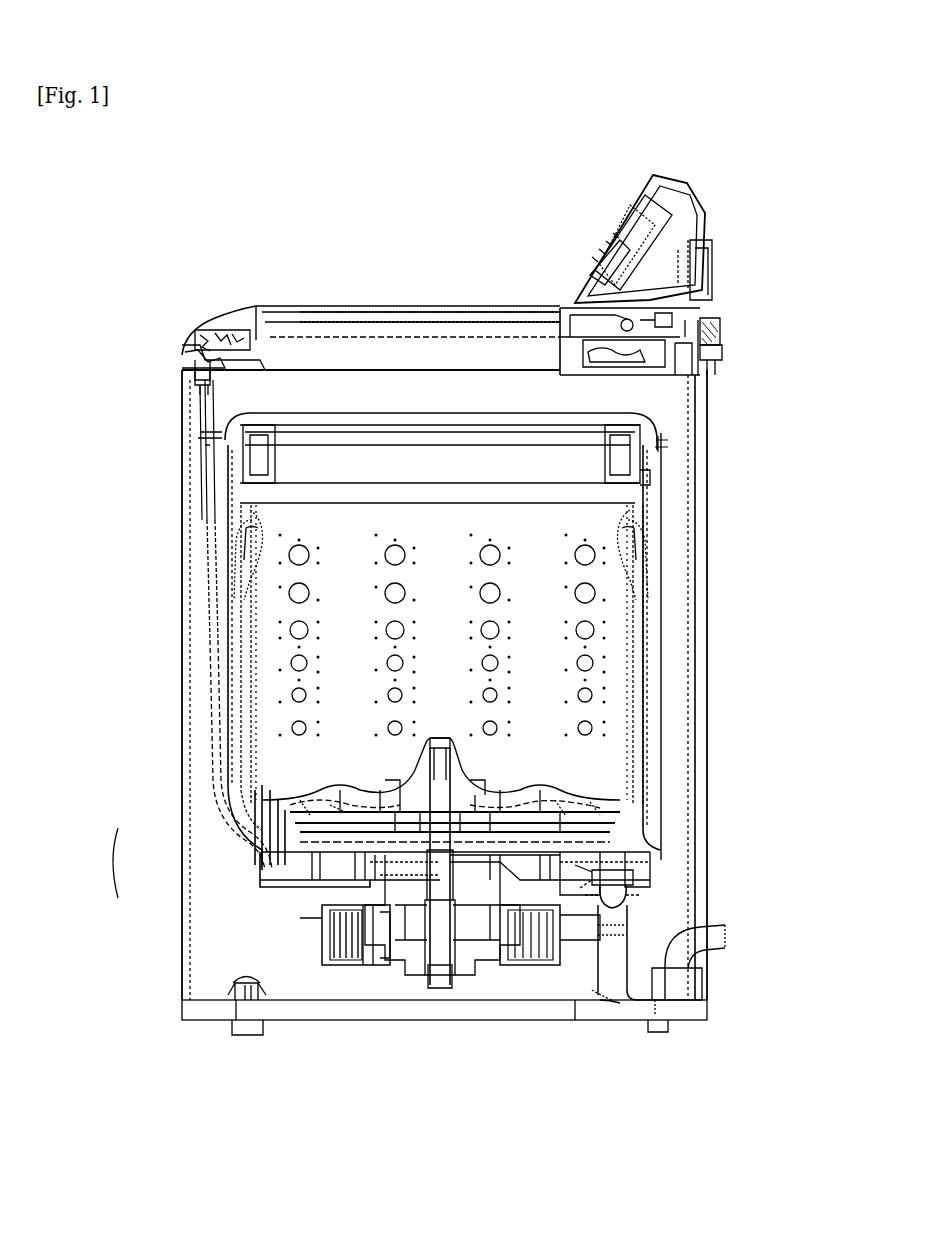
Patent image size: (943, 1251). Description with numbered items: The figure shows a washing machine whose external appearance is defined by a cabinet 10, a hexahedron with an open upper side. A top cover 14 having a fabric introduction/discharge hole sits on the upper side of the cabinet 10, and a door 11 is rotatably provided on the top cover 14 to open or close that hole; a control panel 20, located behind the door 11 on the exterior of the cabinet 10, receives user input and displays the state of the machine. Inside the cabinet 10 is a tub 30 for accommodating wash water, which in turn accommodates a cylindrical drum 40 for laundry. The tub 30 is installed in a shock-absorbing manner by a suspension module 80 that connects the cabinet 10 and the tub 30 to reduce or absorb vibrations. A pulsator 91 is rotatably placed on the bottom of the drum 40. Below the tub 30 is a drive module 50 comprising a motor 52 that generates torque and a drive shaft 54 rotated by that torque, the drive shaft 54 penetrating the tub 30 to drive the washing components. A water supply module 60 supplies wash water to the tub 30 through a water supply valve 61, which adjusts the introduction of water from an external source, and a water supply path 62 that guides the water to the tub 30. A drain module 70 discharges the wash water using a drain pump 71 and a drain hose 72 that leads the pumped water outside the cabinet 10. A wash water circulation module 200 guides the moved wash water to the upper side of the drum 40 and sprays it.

The cabinet 10 is at (205, 418).
The door 11 is at (270, 312).
The top cover 14 is at (185, 357).
The control panel 20 is at (612, 211).
The tub 30 is at (668, 475).
The drum 40 is at (600, 606).
The drive module 50 is at (99, 863).
The motor 52 is at (330, 935).
The drive shaft 54 is at (270, 827).
The water supply module 60 is at (713, 313).
The water supply valve 61 is at (705, 245).
The water supply path 62 is at (720, 340).
The drain module 70 is at (632, 915).
The drain pump 71 is at (630, 882).
The drain hose 72 is at (620, 1005).
The suspension module 80 is at (210, 422).
The pulsator 91 is at (560, 770).
The wash water circulation module 200 is at (648, 525).